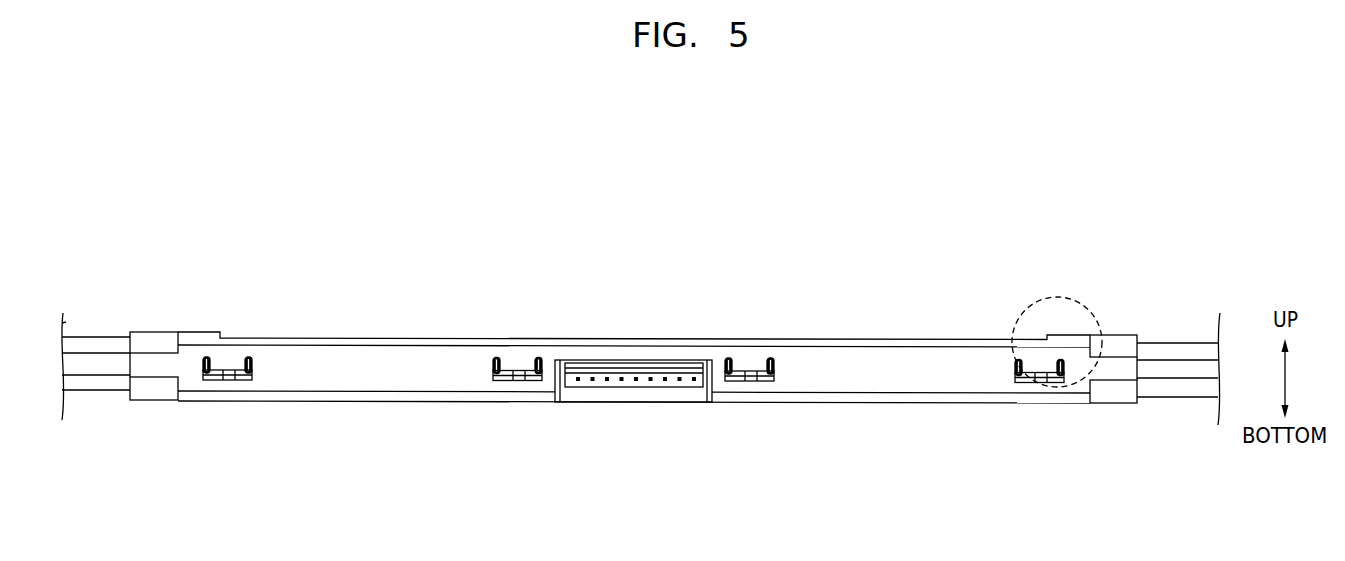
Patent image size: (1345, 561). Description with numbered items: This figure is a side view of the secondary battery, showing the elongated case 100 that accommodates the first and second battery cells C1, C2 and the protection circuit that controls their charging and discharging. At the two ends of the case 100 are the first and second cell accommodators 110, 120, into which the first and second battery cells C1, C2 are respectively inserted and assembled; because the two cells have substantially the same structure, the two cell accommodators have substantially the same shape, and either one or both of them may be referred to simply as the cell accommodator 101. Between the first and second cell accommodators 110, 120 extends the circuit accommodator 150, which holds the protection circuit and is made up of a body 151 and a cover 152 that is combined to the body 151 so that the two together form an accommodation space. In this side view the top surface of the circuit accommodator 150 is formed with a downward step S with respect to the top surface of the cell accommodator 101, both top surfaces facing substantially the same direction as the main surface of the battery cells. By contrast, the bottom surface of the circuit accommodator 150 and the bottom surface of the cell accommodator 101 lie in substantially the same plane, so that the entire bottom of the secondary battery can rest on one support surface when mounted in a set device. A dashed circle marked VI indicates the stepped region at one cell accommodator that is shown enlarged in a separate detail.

The case 100 is at (689, 296).
The cell accommodator 101 is at (192, 331).
The first cell accommodator 110 is at (1096, 310).
The second cell accommodator 120 is at (138, 311).
The circuit accommodator 150 is at (303, 447).
The body 151 is at (634, 339).
The cover 152 is at (634, 397).
The downward step S is at (225, 332).
The detail region VI is at (1090, 312).
The first battery cell C1 is at (1172, 390).
The second battery cell C2 is at (102, 387).